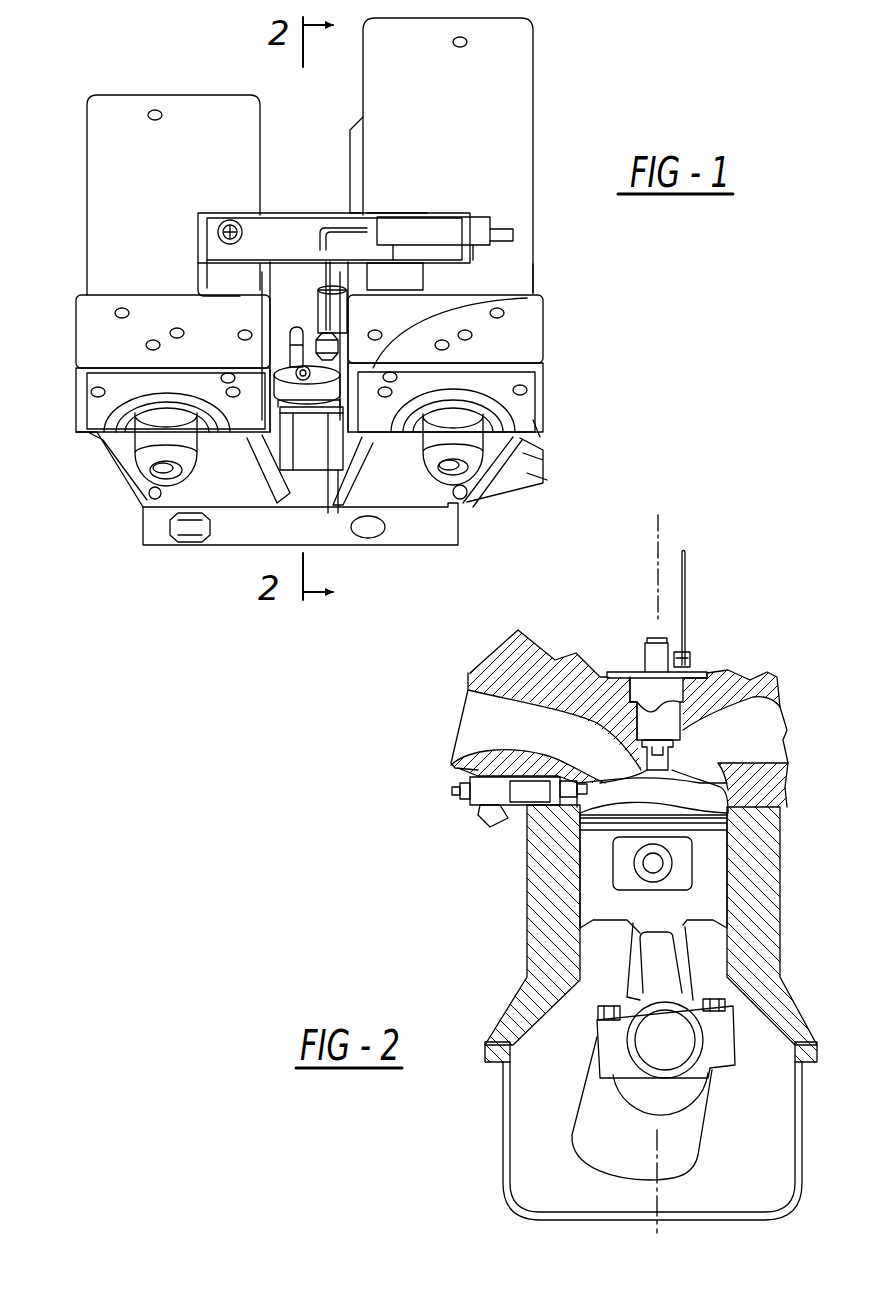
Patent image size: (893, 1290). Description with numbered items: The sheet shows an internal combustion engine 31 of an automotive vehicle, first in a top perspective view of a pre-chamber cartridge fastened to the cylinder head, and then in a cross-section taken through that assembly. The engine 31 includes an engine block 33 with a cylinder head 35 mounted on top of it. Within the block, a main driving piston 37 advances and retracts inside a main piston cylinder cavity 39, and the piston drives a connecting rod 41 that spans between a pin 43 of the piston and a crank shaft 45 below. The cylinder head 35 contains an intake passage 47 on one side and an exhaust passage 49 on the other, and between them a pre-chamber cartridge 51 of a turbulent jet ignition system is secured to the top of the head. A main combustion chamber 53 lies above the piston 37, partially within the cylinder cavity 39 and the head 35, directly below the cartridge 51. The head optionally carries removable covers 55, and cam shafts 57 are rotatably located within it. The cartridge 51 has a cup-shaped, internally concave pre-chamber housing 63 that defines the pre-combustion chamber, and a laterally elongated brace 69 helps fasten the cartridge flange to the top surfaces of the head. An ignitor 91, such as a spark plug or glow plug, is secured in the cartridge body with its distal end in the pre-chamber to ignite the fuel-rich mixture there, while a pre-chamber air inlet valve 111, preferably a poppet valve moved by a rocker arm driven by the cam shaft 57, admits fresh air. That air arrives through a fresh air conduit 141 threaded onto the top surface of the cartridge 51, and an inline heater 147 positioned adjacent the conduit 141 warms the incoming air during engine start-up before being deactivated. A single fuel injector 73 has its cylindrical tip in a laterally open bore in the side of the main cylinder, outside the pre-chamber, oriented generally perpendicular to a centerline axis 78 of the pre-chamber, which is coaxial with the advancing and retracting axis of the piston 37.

In FIG. 1, the internal combustion engine 31 is at (622, 114).
In FIG. 2, the internal combustion engine 31 is at (790, 597).
In FIG. 1, the engine block 33 is at (153, 521).
In FIG. 2, the engine block 33 is at (552, 913).
In FIG. 1, the cylinder head 35 is at (106, 126).
In FIG. 2, the cylinder head 35 is at (457, 765).
In FIG. 2, the main driving piston 37 is at (700, 893).
In FIG. 2, the main piston cylinder cavity 39 is at (735, 960).
In FIG. 2, the connecting rod 41 is at (653, 961).
In FIG. 2, the pin 43 is at (655, 863).
In FIG. 2, the crank shaft 45 is at (595, 1120).
In FIG. 2, the intake passage 47 is at (483, 716).
In FIG. 2, the exhaust passage 49 is at (760, 735).
In FIG. 1, the pre-chamber cartridge 51 is at (288, 299).
In FIG. 2, the pre-chamber cartridge 51 is at (660, 690).
In FIG. 2, the main combustion chamber 53 is at (642, 792).
In FIG. 1, the removable covers 55 is at (162, 259).
In FIG. 1, the cam shafts 57 is at (162, 440).
In FIG. 2, the pre-chamber housing 63 is at (660, 722).
In FIG. 1, the brace 69 is at (298, 238).
In FIG. 2, the fuel injector 73 is at (457, 790).
In FIG. 2, the centerline axis 78 is at (666, 525).
In FIG. 1, the ignitor 91 is at (283, 365).
In FIG. 2, the pre-chamber air inlet valve 111 is at (650, 655).
In FIG. 1, the fresh air conduit 141 is at (518, 246).
In FIG. 2, the fresh air conduit 141 is at (684, 556).
In FIG. 1, the inline heater 147 is at (444, 230).